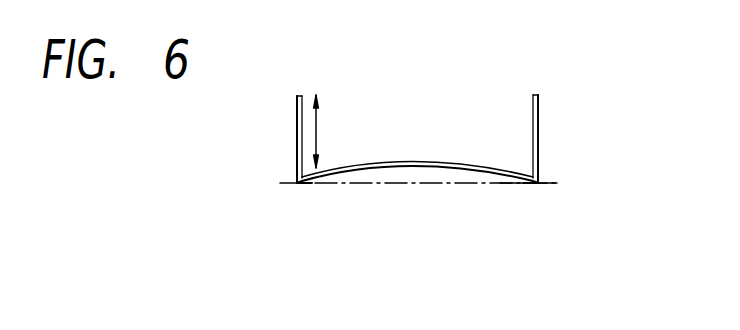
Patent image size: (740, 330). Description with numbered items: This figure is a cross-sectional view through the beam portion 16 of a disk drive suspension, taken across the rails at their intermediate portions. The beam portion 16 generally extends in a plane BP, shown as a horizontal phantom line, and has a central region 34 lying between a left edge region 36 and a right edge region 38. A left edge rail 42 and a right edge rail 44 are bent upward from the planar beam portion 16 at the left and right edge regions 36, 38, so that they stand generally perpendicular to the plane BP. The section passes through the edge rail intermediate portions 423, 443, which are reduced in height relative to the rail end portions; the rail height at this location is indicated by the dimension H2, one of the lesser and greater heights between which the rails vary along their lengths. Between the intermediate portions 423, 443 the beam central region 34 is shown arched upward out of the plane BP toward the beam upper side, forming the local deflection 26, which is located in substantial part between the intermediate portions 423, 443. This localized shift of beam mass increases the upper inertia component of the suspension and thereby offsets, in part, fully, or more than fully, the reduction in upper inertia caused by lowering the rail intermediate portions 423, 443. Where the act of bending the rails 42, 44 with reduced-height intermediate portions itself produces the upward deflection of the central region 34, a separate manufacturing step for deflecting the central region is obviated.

The beam portion 16 is at (515, 192).
The local deflection 26 is at (415, 164).
The beam central region 34 is at (426, 162).
The left edge region 36 is at (300, 183).
The right edge region 38 is at (543, 182).
The left edge rail 42 is at (298, 132).
The right edge rail 44 is at (540, 132).
The left edge rail intermediate portion 423 is at (300, 95).
The right edge rail intermediate portion 443 is at (535, 94).
The rail height H2 is at (320, 132).
The general plane of the beam portion BP is at (360, 185).